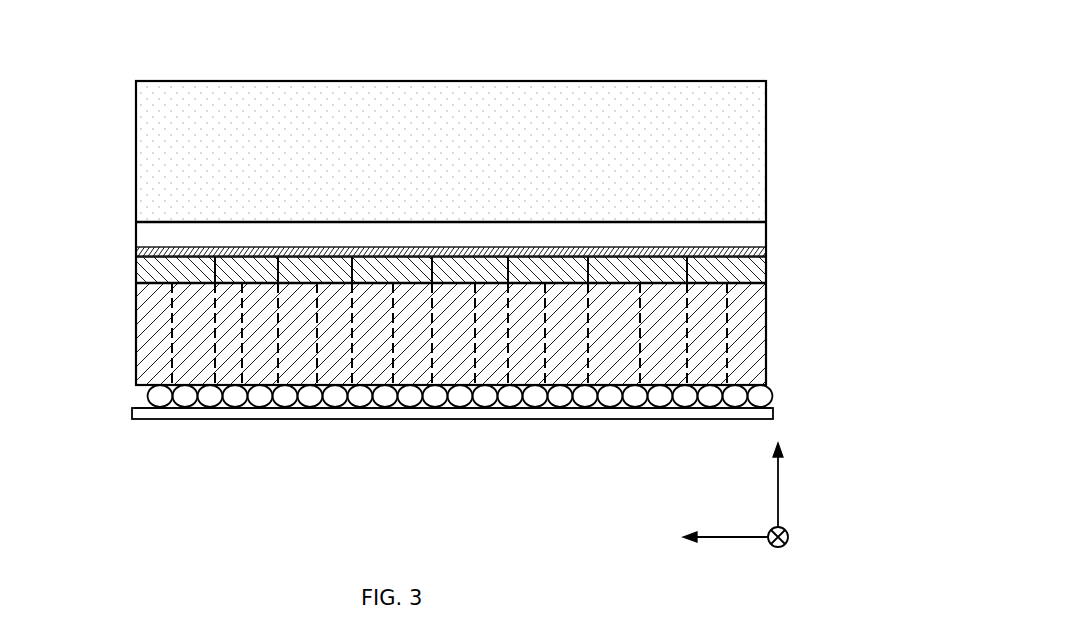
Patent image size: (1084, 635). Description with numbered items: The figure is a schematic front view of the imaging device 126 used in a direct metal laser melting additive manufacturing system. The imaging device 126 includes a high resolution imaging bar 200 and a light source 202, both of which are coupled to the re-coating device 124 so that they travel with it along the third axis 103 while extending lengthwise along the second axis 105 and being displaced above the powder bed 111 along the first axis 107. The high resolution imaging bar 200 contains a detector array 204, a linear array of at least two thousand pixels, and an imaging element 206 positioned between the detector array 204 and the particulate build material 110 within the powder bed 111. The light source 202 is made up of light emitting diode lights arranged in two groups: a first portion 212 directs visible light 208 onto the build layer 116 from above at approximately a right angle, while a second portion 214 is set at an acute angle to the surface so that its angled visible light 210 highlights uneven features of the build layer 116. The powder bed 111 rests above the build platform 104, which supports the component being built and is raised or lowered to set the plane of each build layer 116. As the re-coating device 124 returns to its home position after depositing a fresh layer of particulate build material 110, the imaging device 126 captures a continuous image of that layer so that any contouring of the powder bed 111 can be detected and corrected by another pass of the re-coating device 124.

The imaging device 126 is at (690, 57).
The high resolution imaging bar 200 is at (118, 118).
The detector array 204 is at (718, 155).
The imaging element 206 is at (755, 226).
The light source 202 is at (782, 250).
The first portion of the LED lights 212 is at (136, 250).
The second portion of the LED lights 214 is at (136, 275).
The visible light 208 is at (688, 310).
The angled visible light 210 is at (172, 326).
The re-coating device 124 is at (755, 339).
The particulate build material 110 is at (150, 393).
The powder bed 111 is at (775, 392).
The build platform 104 is at (132, 415).
The build layer 116 is at (776, 403).
The second axis 105 is at (730, 536).
The first axis 107 is at (780, 489).
The third axis 103 is at (790, 537).